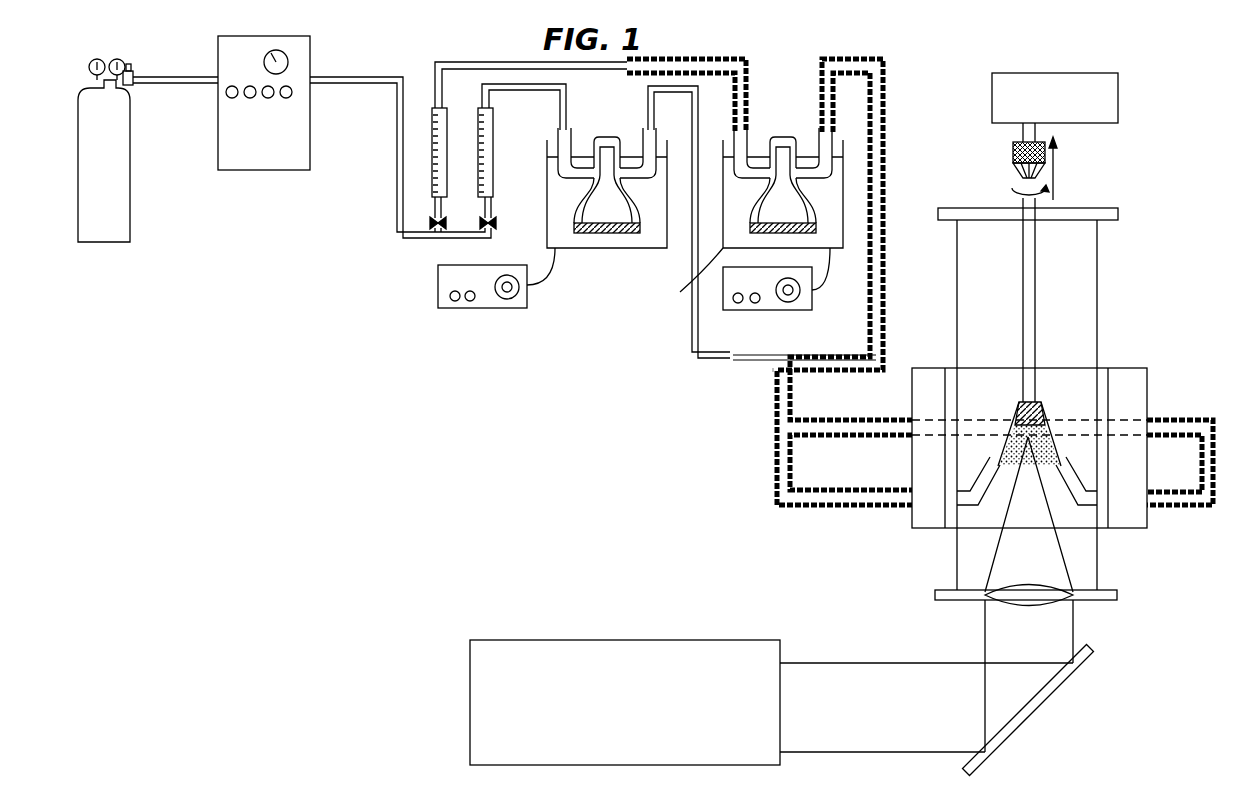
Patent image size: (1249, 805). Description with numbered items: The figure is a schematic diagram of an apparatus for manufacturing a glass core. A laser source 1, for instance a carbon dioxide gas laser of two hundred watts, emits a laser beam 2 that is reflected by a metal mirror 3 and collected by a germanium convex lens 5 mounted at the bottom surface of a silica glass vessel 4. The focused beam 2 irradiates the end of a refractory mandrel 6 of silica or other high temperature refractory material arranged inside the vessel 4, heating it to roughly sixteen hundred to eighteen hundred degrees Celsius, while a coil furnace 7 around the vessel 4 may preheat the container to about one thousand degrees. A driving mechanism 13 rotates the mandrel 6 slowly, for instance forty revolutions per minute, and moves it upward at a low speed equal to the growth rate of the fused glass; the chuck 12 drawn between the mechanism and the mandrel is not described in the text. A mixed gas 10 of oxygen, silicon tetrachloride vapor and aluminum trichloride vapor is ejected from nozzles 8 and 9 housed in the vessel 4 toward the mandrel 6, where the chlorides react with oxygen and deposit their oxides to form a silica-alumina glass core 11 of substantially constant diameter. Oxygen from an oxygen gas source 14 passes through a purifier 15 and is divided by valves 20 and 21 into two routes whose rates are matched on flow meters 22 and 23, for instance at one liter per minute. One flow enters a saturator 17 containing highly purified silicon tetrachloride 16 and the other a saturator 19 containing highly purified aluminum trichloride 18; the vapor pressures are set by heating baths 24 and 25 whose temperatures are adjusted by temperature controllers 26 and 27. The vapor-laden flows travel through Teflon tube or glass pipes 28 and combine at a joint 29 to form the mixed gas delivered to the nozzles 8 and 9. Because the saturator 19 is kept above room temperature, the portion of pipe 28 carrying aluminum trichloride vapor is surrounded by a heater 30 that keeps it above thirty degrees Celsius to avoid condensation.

The laser source 1 is at (648, 640).
The laser beam 2 is at (905, 680).
The metal mirror 3 is at (1060, 690).
The silica glass vessel 4 is at (1098, 566).
The germanium convex lens 5 is at (1050, 605).
The refractory mandrel 6 is at (1037, 272).
The coil furnace 7 is at (934, 378).
The nozzle 8 is at (1062, 478).
The nozzle 9 is at (996, 477).
The mixed gas 10 is at (1012, 420).
The glass core 11 is at (1040, 405).
The chuck 12 is at (1056, 150).
The driving mechanism 13 is at (993, 106).
The oxygen gas source 14 is at (123, 186).
The purifier 15 is at (302, 143).
The silicon tetrachloride 16 is at (603, 240).
The saturator 17 is at (576, 200).
The aluminum trichloride 18 is at (812, 230).
The saturator 19 is at (812, 194).
The valve 20 is at (432, 223).
The valve 21 is at (494, 223).
The flow meter 22 is at (434, 110).
The flow meter 23 is at (486, 108).
The heating bath 24 is at (630, 248).
The heating bath 25 is at (680, 292).
The temperature controller 26 is at (497, 308).
The temperature controller 27 is at (775, 310).
The pipe 28 is at (648, 88).
The joint 29 is at (774, 370).
The heater 30 is at (886, 108).